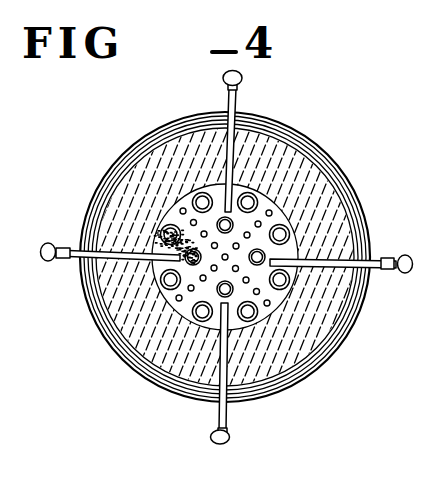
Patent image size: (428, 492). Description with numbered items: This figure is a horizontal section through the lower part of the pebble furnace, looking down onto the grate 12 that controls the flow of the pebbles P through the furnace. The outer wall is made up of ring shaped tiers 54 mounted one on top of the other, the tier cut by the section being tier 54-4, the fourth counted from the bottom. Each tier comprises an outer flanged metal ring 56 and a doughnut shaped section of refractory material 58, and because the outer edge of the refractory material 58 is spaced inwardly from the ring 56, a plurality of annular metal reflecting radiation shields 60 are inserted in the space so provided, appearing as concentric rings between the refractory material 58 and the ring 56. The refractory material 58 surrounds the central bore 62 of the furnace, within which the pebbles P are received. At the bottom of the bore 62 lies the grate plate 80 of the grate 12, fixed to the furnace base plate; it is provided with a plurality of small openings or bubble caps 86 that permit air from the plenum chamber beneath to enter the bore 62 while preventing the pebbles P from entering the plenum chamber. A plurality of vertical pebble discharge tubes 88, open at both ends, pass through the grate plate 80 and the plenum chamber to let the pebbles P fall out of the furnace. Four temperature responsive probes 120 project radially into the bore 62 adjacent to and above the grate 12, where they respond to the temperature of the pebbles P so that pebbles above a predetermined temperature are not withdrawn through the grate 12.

The grate 12 is at (276, 200).
The ring shaped tier 54 is at (113, 343).
The tier 54-4 is at (195, 376).
The outer flanged metal ring 56 is at (110, 165).
The refractory material 58 is at (250, 150).
The annular metal reflecting radiation shield 60 is at (162, 142).
The bore 62 is at (245, 191).
The grate plate 80 is at (259, 307).
The bubble cap 86 is at (251, 236).
The pebble discharge tube 88 is at (201, 193).
The temperature responsive probe 120 is at (230, 108).
The pebbles P is at (157, 248).